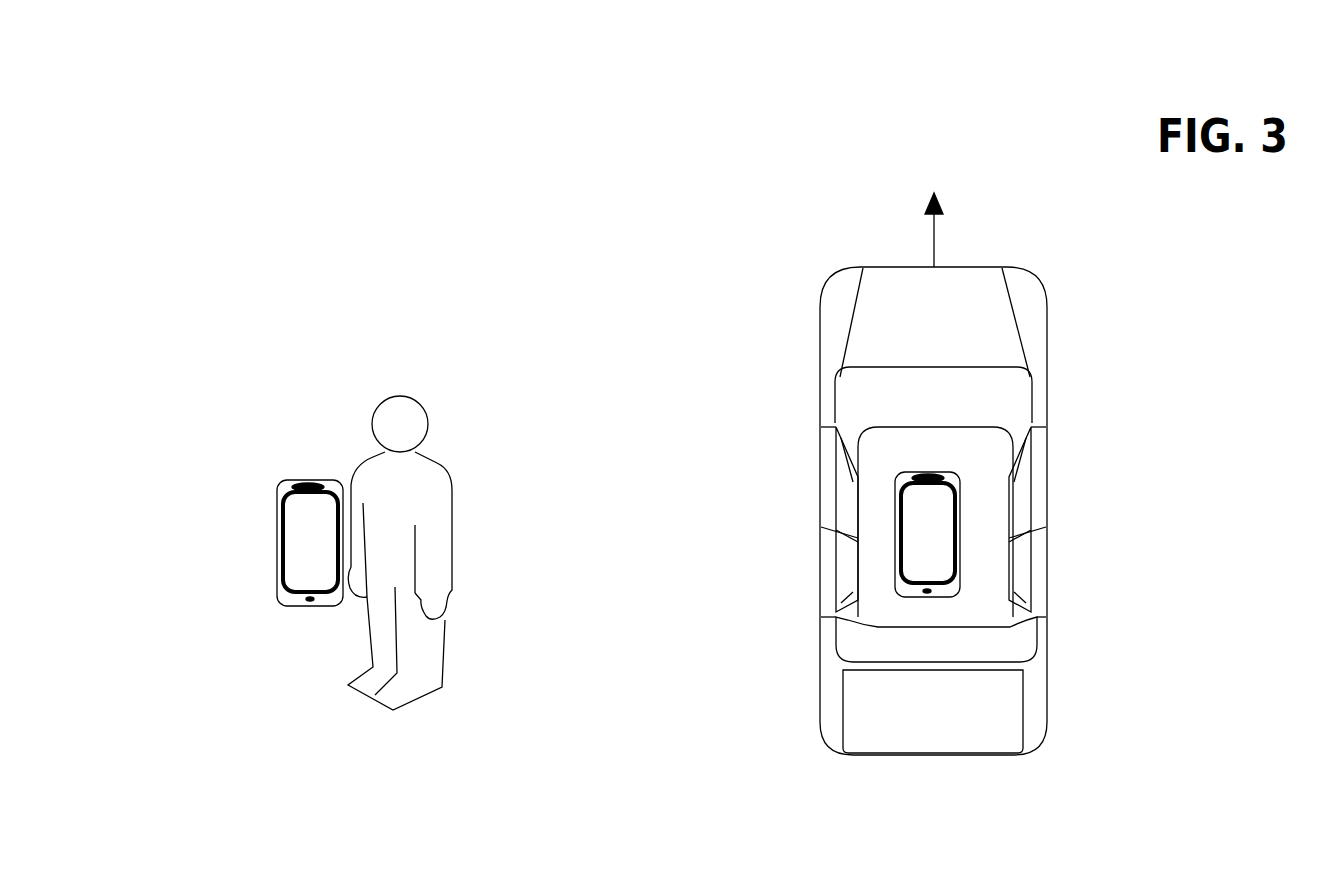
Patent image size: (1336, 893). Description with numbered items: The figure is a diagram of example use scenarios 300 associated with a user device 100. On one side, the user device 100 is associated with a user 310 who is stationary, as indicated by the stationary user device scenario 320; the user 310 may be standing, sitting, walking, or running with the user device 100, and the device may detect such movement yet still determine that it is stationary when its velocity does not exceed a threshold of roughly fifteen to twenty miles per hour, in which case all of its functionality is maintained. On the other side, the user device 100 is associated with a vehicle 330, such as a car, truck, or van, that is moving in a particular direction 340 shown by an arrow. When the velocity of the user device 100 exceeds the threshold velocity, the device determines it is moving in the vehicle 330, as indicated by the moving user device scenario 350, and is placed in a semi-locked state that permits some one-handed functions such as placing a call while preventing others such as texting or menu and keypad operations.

The example use scenarios 300 is at (152, 91).
The user device 100 is at (277, 548).
The user 310 is at (400, 396).
The stationary user device scenario 320 is at (582, 822).
The vehicle 330 is at (1047, 548).
The direction 340 is at (935, 248).
The moving user device scenario 350 is at (1105, 822).